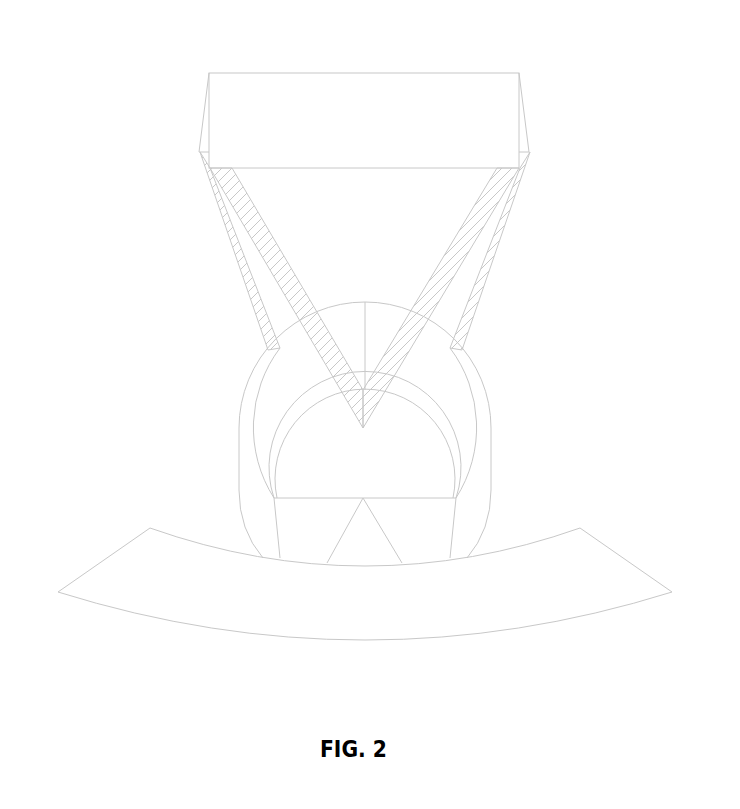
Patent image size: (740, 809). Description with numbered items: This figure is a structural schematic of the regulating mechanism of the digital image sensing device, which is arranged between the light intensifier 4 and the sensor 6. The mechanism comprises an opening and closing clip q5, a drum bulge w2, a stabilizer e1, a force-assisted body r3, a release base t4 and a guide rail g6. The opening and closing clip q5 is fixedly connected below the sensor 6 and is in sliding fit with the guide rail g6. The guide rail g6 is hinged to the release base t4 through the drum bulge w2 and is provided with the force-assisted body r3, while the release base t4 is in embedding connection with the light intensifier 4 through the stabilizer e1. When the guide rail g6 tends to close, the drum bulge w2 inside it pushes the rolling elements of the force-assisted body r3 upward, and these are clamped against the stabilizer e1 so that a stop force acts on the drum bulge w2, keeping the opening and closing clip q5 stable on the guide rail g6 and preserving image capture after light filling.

The sensor 6 is at (258, 93).
The opening and closing clip q5 is at (447, 227).
The drum bulge w2 is at (300, 397).
The force-assisted body r3 is at (447, 377).
The stabilizer e1 is at (247, 480).
The guide rail g6 is at (413, 463).
The release base t4 is at (427, 547).
The light intensifier 4 is at (135, 573).